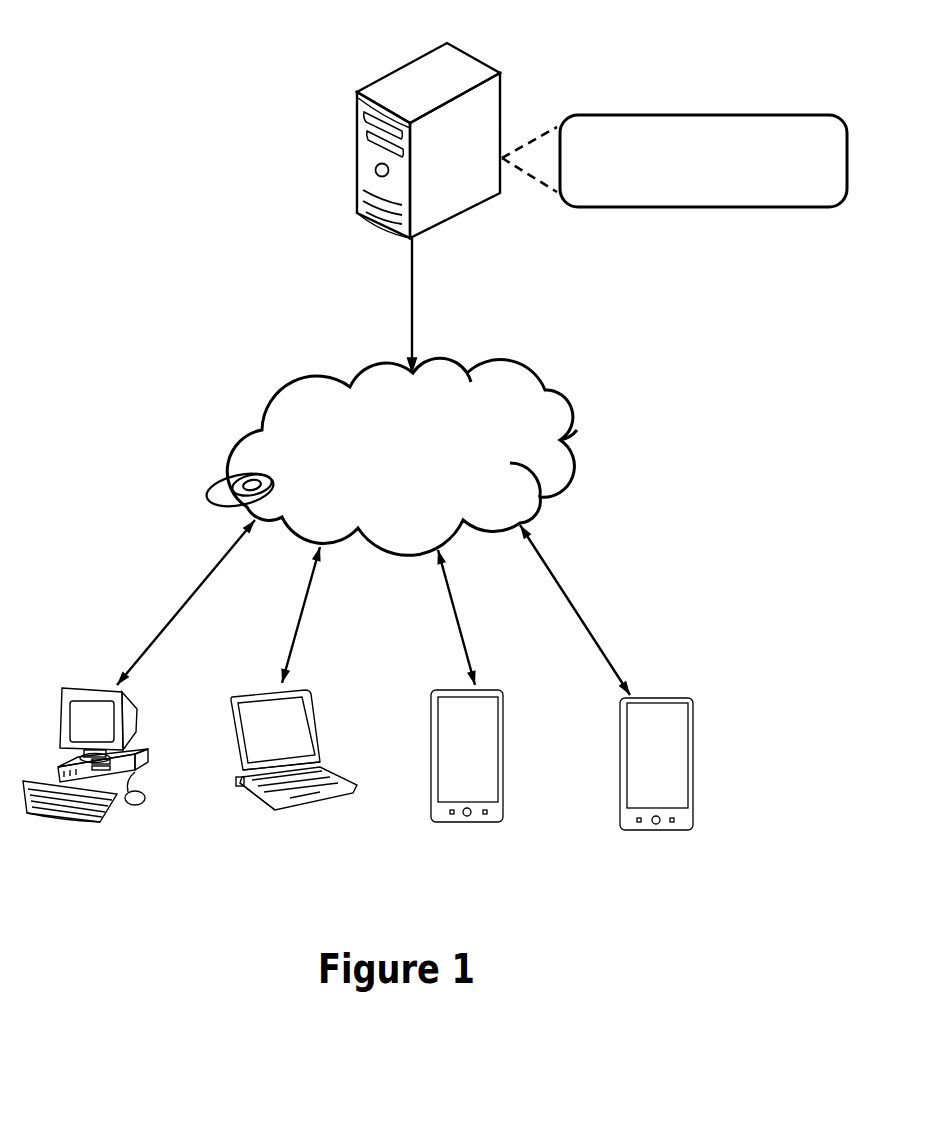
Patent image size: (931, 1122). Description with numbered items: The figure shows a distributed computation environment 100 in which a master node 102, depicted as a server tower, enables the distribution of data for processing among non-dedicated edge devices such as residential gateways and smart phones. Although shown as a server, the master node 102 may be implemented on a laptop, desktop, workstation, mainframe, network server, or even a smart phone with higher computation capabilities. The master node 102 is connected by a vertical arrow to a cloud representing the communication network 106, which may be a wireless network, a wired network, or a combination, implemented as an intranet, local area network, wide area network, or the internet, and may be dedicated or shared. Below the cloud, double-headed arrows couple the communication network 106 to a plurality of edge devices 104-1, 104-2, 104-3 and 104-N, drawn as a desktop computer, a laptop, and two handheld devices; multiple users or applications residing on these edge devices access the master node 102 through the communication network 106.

The distributed computation environment 100 is at (150, 138).
The master node 102 is at (802, 172).
The communication network 106 is at (377, 512).
The edge device 104-1 is at (70, 817).
The edge device 104-2 is at (317, 800).
The edge device 104-3 is at (488, 817).
The edge device 104-N is at (667, 828).